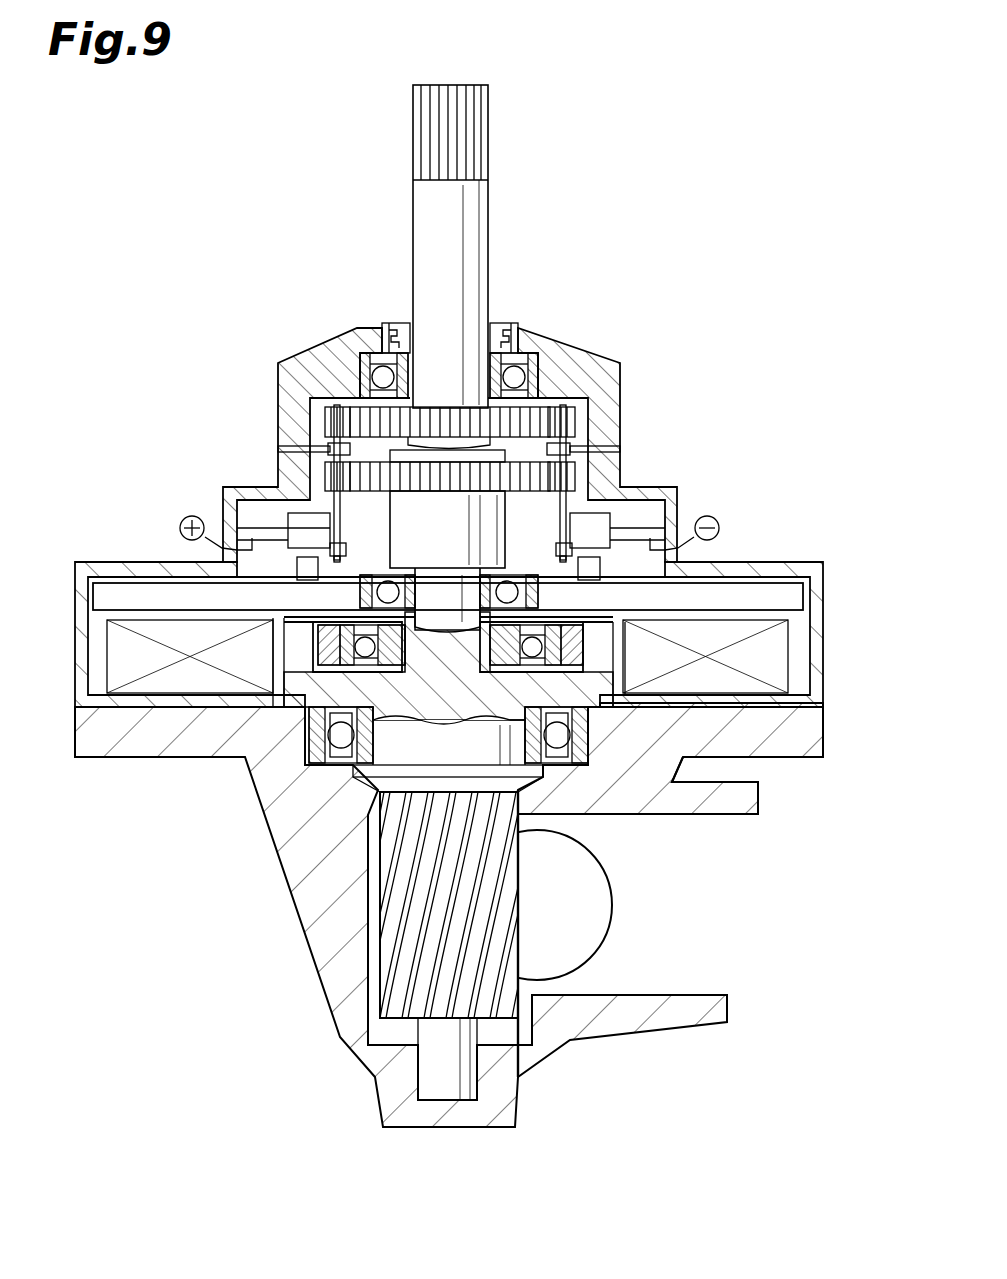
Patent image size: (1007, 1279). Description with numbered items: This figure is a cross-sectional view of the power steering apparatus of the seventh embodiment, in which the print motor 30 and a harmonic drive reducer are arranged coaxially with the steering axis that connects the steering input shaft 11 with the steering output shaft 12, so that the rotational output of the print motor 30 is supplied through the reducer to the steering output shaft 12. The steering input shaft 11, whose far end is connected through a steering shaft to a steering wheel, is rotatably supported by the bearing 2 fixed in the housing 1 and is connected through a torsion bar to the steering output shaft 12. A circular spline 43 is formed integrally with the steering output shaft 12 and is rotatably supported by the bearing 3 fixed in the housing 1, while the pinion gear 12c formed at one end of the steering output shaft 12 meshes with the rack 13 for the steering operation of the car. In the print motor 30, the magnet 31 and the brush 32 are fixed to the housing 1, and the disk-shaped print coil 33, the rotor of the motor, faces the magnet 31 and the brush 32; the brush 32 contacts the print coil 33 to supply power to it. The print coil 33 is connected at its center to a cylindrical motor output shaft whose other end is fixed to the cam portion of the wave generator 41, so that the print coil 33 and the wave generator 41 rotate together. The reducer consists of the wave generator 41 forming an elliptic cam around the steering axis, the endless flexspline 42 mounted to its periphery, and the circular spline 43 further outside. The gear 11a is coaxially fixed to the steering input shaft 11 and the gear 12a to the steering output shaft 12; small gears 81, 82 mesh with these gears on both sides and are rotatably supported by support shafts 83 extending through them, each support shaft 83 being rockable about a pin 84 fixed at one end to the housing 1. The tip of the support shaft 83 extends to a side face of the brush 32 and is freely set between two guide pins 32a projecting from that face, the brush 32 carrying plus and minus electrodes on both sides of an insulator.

The housing 1 is at (823, 645).
The bearing 2 is at (515, 360).
The bearing 3 is at (612, 778).
The steering input shaft 11 is at (413, 190).
The gear 11a is at (365, 400).
The steering output shaft 12 is at (372, 787).
The gear 12a is at (528, 470).
The pinion gear 12c is at (383, 955).
The rack 13 is at (592, 927).
The print motor 30 is at (411, 655).
The magnet 31 is at (140, 688).
The brush 32 is at (603, 520).
The guide pins 32a is at (342, 548).
The print coil 33 is at (122, 592).
The wave generator 41 is at (320, 745).
The flexspline 42 is at (328, 668).
The circular spline 43 is at (620, 700).
The small gear 81 is at (332, 400).
The small gear 82 is at (310, 452).
The support shaft 83 is at (334, 500).
The pin 84 is at (328, 420).